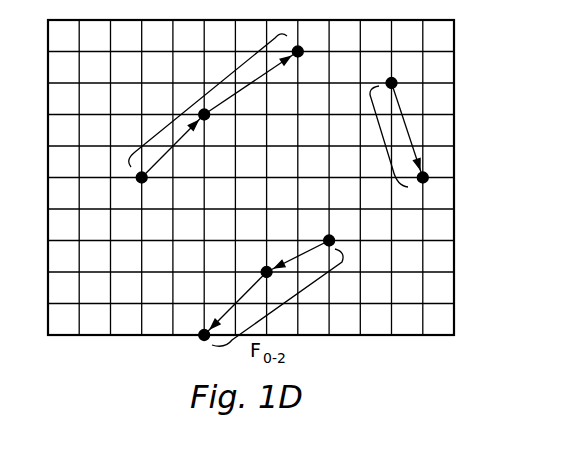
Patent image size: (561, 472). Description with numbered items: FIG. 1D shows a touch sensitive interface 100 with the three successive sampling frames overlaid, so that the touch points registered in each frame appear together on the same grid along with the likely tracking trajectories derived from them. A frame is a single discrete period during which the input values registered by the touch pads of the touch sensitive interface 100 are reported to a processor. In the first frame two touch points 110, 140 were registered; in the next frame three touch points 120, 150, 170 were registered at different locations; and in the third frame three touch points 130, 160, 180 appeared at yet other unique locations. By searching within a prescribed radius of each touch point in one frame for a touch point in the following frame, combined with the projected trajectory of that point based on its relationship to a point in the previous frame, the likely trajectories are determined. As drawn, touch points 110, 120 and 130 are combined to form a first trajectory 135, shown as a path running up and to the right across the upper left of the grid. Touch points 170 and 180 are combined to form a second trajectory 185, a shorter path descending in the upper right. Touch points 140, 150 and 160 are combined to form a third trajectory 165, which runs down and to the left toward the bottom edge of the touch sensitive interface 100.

The touch sensitive interface 100 is at (454, 30).
The touch point 110 is at (146, 182).
The touch point 120 is at (208, 118).
The touch point 130 is at (302, 56).
The first trajectory 135 is at (203, 97).
The touch point 140 is at (326, 238).
The touch point 150 is at (263, 269).
The touch point 160 is at (201, 339).
The third trajectory 165 is at (289, 303).
The touch point 170 is at (395, 80).
The touch point 180 is at (427, 181).
The second trajectory 185 is at (386, 147).